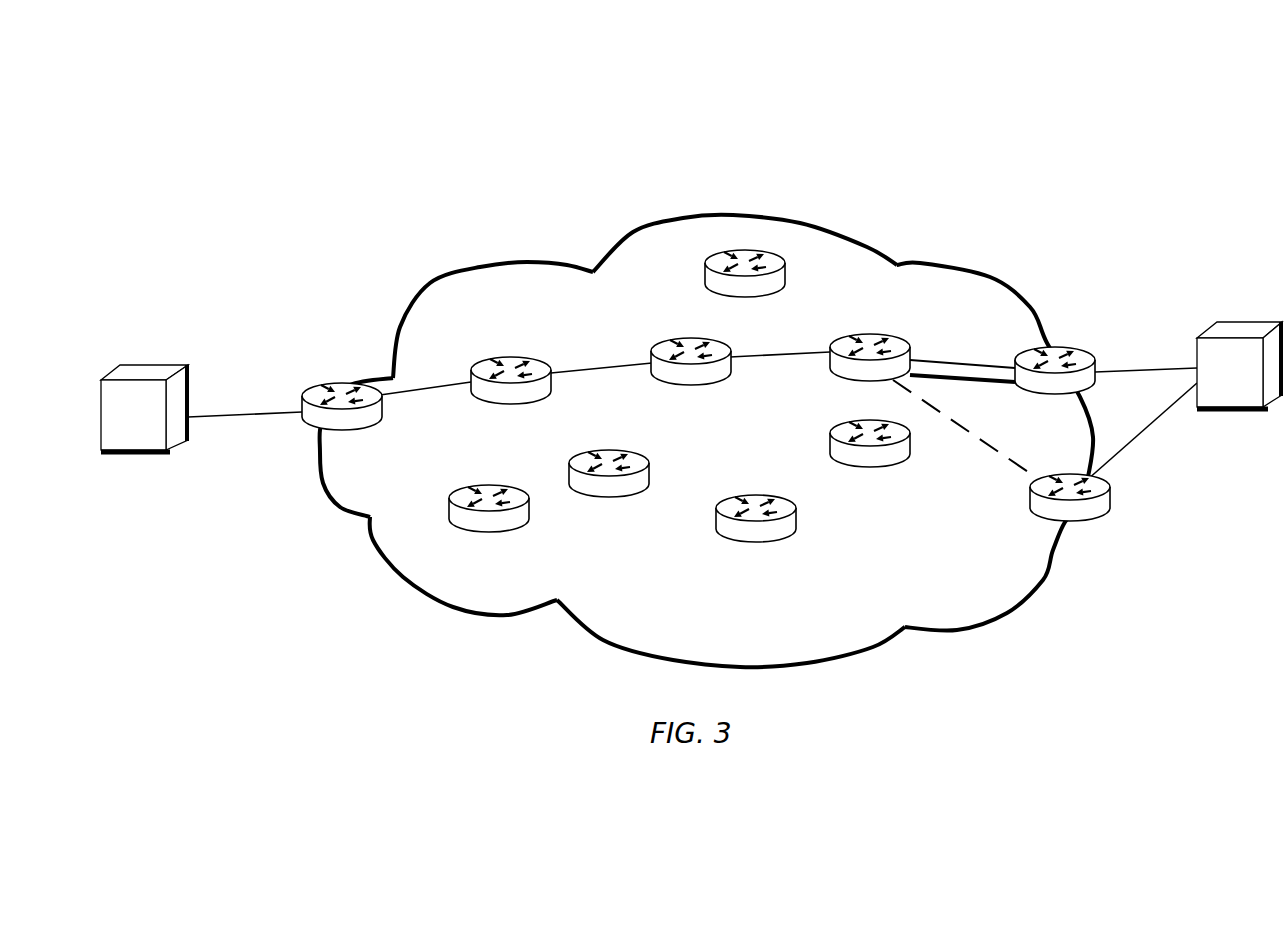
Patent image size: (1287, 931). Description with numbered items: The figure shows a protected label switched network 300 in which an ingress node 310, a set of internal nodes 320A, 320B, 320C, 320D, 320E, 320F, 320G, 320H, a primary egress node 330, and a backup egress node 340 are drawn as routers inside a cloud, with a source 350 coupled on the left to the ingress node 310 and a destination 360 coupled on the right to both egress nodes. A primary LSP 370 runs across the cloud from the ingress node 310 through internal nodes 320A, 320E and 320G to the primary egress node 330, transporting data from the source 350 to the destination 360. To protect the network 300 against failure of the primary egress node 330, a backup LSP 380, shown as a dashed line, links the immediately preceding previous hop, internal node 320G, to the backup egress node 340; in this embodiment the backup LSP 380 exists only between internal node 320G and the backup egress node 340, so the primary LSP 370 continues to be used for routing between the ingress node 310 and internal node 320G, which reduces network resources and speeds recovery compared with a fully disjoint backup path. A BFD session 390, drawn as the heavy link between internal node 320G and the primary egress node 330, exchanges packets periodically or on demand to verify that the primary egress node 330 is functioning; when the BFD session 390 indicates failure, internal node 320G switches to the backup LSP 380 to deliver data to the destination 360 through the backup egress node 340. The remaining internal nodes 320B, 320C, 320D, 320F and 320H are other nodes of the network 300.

The protected label switched network 300 is at (152, 88).
The ingress node 310 is at (330, 388).
The internal node 320A is at (480, 358).
The internal node 320B is at (452, 493).
The internal node 320C is at (570, 465).
The internal node 320D is at (715, 507).
The internal node 320E is at (715, 387).
The internal node 320F is at (745, 300).
The internal node 320G is at (870, 335).
The internal node 320H is at (848, 467).
The primary egress node 330 is at (1068, 347).
The backup egress node 340 is at (1093, 522).
The source 350 is at (163, 367).
The destination 360 is at (1248, 322).
The primary LSP 370 is at (448, 383).
The backup LSP 380 is at (983, 438).
The BFD session 390 is at (980, 380).